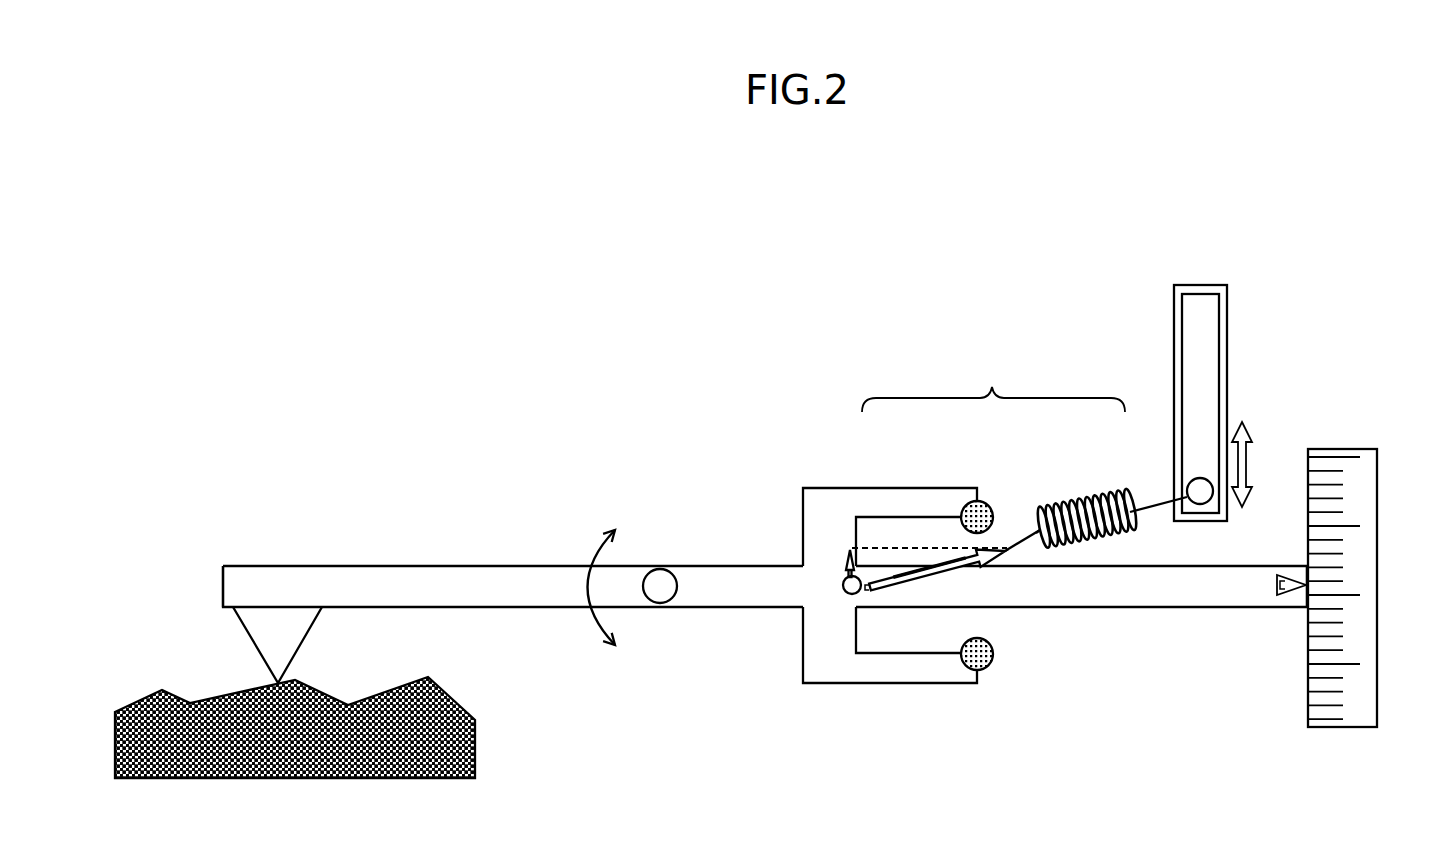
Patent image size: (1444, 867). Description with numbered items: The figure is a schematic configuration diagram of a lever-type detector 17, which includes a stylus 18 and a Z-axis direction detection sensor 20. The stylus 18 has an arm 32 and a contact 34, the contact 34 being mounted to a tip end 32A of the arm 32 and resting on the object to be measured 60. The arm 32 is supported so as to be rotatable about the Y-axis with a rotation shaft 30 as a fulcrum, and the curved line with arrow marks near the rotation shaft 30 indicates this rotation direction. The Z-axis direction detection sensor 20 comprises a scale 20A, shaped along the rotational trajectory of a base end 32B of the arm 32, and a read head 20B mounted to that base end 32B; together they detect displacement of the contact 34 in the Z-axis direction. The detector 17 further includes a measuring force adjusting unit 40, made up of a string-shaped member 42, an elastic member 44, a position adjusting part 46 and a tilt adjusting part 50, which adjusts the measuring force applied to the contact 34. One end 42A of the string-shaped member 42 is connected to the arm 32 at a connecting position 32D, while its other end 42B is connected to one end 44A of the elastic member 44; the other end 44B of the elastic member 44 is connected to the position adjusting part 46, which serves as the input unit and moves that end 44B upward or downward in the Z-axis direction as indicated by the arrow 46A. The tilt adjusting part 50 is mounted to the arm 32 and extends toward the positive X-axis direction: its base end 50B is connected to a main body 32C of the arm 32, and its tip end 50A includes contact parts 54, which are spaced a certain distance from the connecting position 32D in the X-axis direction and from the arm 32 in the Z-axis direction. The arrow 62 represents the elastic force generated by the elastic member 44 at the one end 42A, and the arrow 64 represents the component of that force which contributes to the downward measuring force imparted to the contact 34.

The detector 17 is at (598, 325).
The stylus 18 is at (208, 577).
The Z-axis direction detection sensor 20 is at (1381, 388).
The scale 20A is at (1343, 449).
The read head 20B is at (1278, 592).
The rotation shaft 30 is at (660, 568).
The arm 32 is at (398, 553).
The tip end 32A is at (218, 612).
The base end 32B is at (1307, 610).
The main body 32C is at (503, 572).
The connecting position 32D is at (850, 594).
The contact 34 is at (300, 637).
The measuring force adjusting unit 40 is at (993, 383).
The string-shaped member 42 is at (1022, 533).
The one end of string-shaped member 42A is at (876, 586).
The other end of string-shaped member 42B is at (1038, 543).
The elastic member 44 is at (1092, 491).
The one end of elastic member 44A is at (1079, 592).
The other end of elastic member 44B is at (1188, 500).
The position adjusting part 46 is at (1215, 330).
The moving direction 46A is at (1246, 462).
The tilt adjusting part 50 is at (900, 477).
The tip end of tilt adjusting part 50A is at (972, 483).
The base end of tilt adjusting part 50B is at (796, 556).
The contact parts 54 is at (985, 500).
The object to be measured 60 is at (296, 778).
The elastic force 62 is at (930, 575).
The measuring force component 64 is at (846, 584).